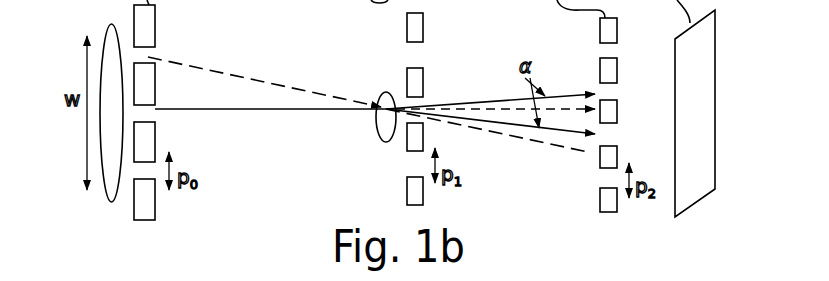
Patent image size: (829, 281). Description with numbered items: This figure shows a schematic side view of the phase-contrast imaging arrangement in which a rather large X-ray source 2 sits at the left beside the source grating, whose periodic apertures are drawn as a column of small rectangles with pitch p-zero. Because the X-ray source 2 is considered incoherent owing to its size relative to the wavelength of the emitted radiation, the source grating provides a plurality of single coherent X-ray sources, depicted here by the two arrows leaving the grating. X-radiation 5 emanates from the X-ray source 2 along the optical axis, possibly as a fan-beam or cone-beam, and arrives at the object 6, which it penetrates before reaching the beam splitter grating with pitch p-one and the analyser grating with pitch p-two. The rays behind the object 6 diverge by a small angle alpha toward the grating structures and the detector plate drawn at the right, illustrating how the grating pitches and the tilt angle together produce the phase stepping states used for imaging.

The X-ray source 2 is at (110, 110).
The X-radiation 5 is at (225, 70).
The object 6 is at (385, 95).